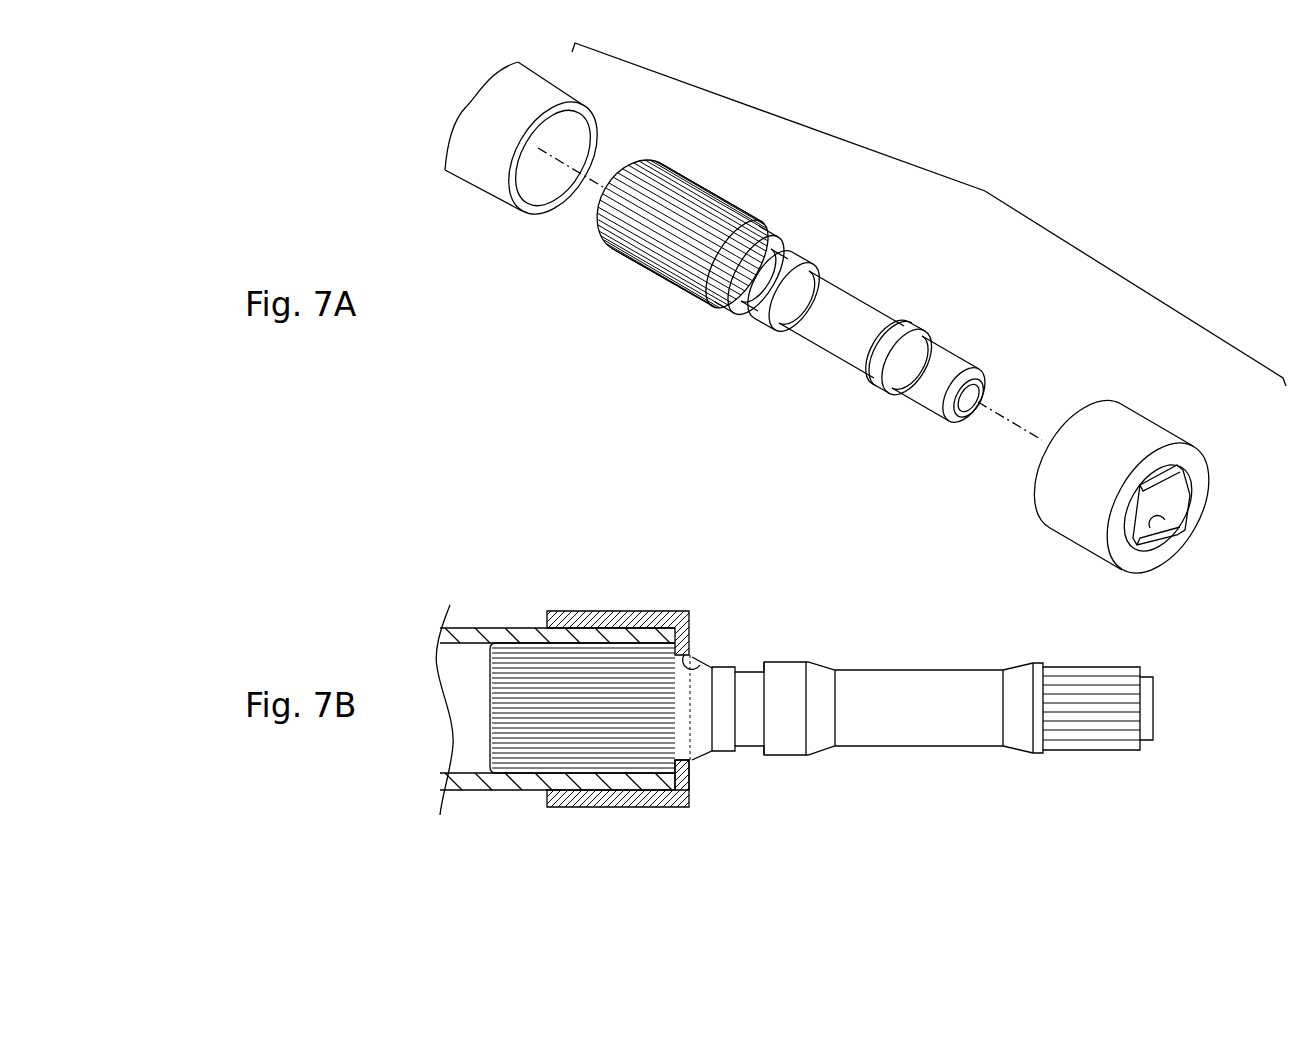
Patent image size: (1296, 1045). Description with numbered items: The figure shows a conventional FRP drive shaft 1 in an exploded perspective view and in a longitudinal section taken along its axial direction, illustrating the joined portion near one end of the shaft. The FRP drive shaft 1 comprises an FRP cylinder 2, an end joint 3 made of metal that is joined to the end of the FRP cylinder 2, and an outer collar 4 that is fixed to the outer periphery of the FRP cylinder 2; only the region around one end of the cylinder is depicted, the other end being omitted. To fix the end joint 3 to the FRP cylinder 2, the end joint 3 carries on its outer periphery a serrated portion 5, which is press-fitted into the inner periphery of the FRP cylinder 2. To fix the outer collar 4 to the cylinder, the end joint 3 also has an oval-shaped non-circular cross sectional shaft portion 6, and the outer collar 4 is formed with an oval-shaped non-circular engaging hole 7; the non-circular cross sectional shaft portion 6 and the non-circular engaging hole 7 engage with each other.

In FIG. 7A, the FRP drive shaft 1 is at (985, 191).
In FIG. 7B, the FRP drive shaft 1 is at (798, 592).
In FIG. 7A, the FRP cylinder 2 is at (533, 66).
In FIG. 7B, the FRP cylinder 2 is at (495, 630).
In FIG. 7A, the end joint 3 is at (858, 283).
In FIG. 7B, the end joint 3 is at (886, 657).
In FIG. 7A, the outer collar 4 is at (1149, 395).
In FIG. 7B, the outer collar 4 is at (642, 601).
In FIG. 7A, the serrated portion 5 is at (703, 185).
In FIG. 7B, the serrated portion 5 is at (580, 640).
In FIG. 7A, the non-circular cross sectional shaft portion 6 is at (750, 212).
In FIG. 7B, the non-circular cross sectional shaft portion 6 is at (690, 778).
In FIG. 7A, the non-circular engaging hole 7 is at (1162, 518).
In FIG. 7B, the non-circular engaging hole 7 is at (700, 662).